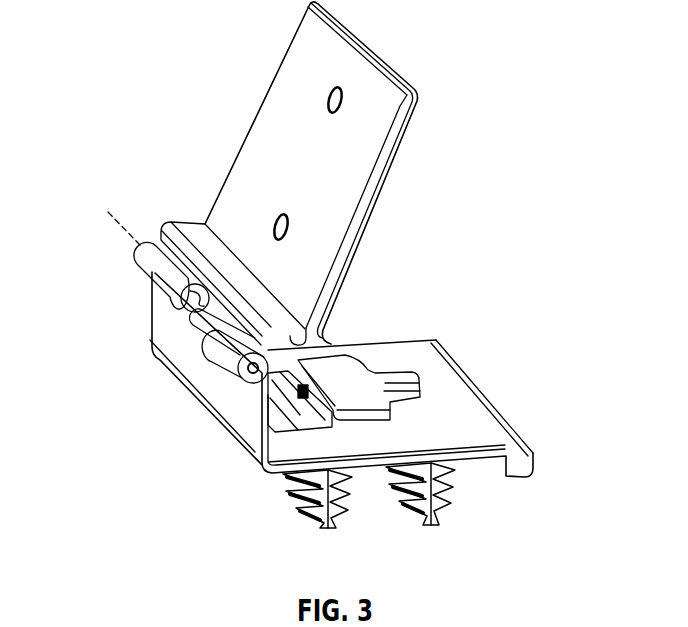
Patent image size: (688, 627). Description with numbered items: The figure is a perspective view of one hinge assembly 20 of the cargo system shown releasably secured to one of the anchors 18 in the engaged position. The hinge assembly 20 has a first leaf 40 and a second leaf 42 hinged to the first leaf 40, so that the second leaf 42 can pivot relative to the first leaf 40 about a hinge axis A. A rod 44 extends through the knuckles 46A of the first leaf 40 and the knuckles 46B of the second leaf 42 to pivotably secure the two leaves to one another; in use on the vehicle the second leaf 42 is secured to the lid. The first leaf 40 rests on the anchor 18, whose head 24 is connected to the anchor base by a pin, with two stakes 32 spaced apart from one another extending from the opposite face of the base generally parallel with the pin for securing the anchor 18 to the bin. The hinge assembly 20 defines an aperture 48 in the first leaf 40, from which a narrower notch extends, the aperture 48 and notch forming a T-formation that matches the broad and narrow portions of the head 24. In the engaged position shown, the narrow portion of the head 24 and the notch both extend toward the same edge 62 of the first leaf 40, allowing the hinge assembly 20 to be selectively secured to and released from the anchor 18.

The hinge assembly 20 is at (497, 149).
The second leaf 42 is at (293, 77).
The aperture 48 is at (298, 338).
The hinge axis A is at (104, 214).
The knuckles of the first leaf 46A is at (136, 260).
The knuckles of the second leaf 46B is at (170, 288).
The rod 44 is at (181, 304).
The edge of the first leaf 62 is at (493, 405).
The anchor 18 is at (457, 393).
The first leaf 40 is at (416, 358).
The head 24 is at (378, 373).
The stakes 32 is at (331, 530).